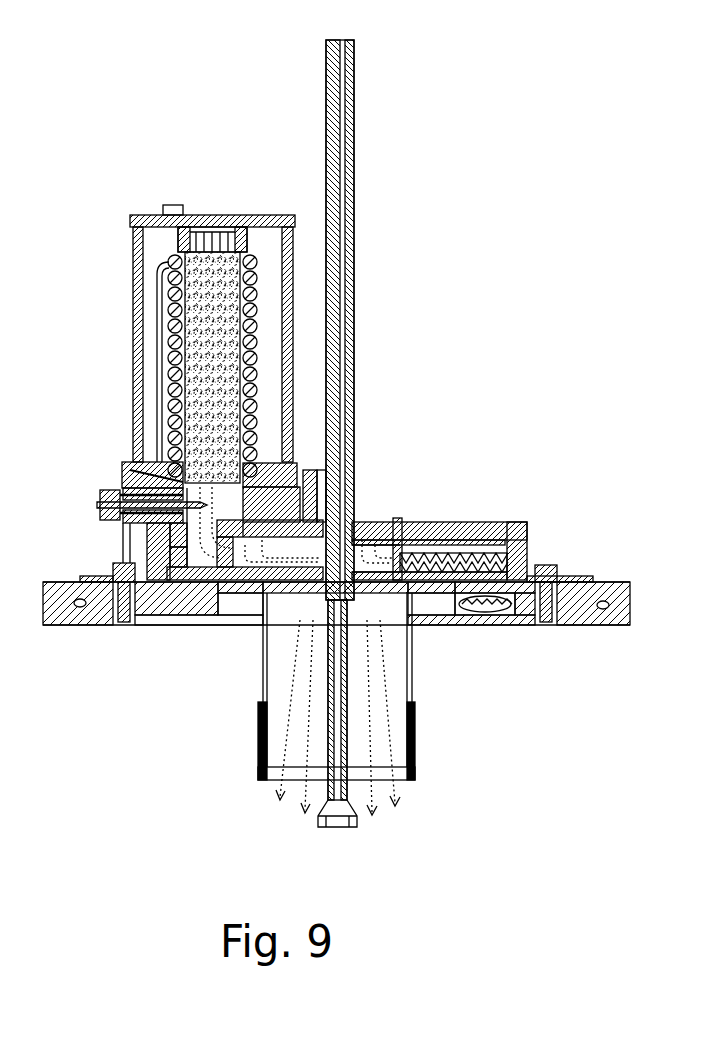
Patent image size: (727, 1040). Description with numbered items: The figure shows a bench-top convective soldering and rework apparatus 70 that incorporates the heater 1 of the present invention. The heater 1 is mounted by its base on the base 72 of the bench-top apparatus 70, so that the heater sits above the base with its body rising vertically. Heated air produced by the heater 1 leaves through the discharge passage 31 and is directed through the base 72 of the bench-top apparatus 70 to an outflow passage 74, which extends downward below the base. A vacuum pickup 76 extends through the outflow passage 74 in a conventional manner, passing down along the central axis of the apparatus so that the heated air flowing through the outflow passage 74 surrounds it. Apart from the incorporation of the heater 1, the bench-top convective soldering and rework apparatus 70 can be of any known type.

The heater 1 is at (130, 298).
The discharge passage 31 is at (122, 470).
The bench-top convective soldering and rework apparatus 70 is at (427, 290).
The base 72 is at (535, 562).
The outflow passage 74 is at (285, 650).
The vacuum pickup 76 is at (355, 373).